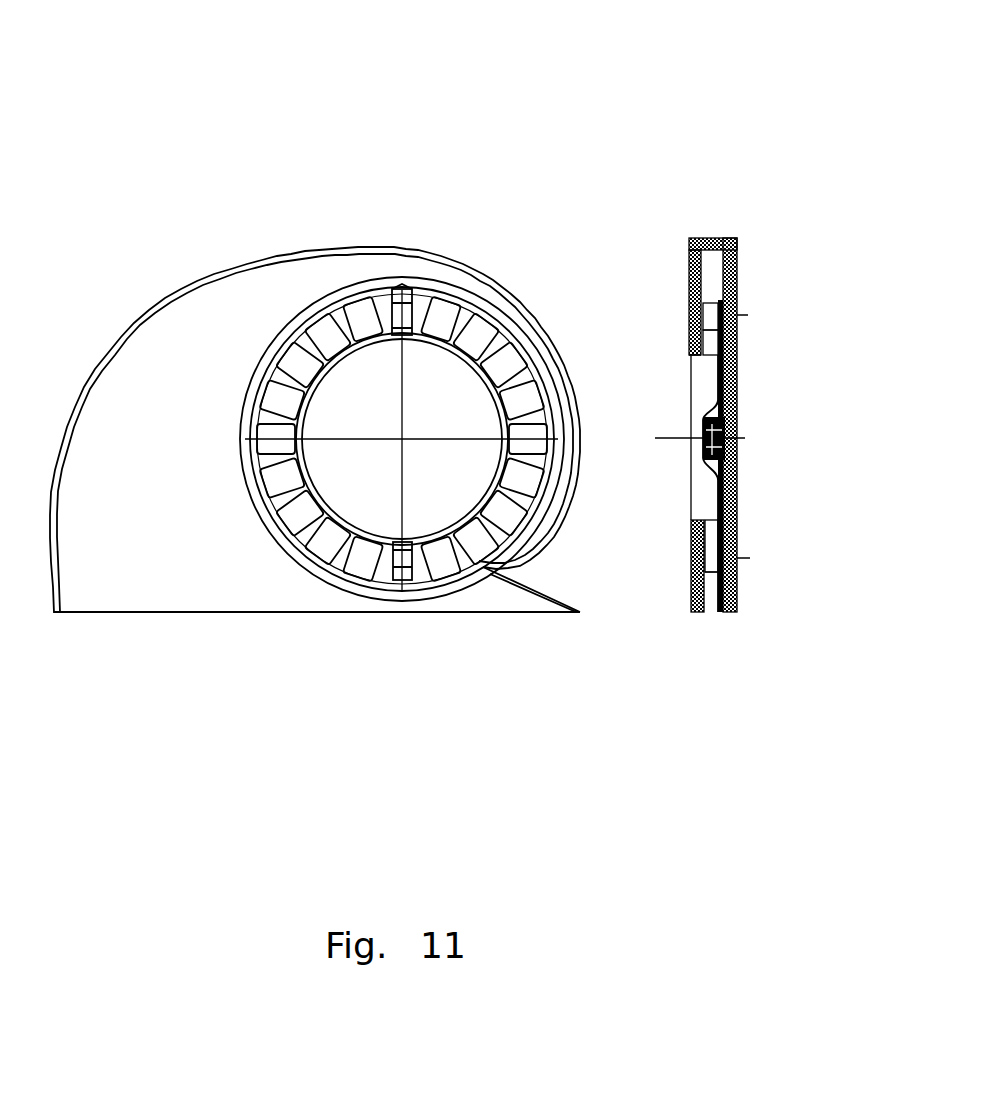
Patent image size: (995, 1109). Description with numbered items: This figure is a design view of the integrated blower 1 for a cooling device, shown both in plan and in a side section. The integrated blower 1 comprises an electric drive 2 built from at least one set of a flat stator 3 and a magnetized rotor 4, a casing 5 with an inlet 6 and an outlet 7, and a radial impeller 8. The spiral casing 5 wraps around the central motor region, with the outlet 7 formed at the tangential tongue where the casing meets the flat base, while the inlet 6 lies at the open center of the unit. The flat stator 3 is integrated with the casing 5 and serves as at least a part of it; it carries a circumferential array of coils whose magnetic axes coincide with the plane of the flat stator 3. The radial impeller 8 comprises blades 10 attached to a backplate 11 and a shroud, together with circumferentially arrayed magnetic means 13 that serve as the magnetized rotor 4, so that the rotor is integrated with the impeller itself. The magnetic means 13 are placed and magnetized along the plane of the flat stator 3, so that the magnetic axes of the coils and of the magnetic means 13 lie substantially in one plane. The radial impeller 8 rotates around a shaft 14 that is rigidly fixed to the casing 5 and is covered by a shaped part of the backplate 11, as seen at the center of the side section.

The integrated blower 1 is at (560, 178).
The electric drive 2 is at (735, 328).
The flat stator 3 is at (360, 552).
The magnetized rotor 4 is at (302, 523).
The casing 5 is at (160, 312).
The inlet 6 is at (440, 472).
The outlet 7 is at (153, 590).
The radial impeller 8 is at (348, 303).
The blades 10 is at (715, 330).
The backplate 11 is at (735, 397).
The magnetic means 13 is at (380, 565).
The shaft 14 is at (735, 447).